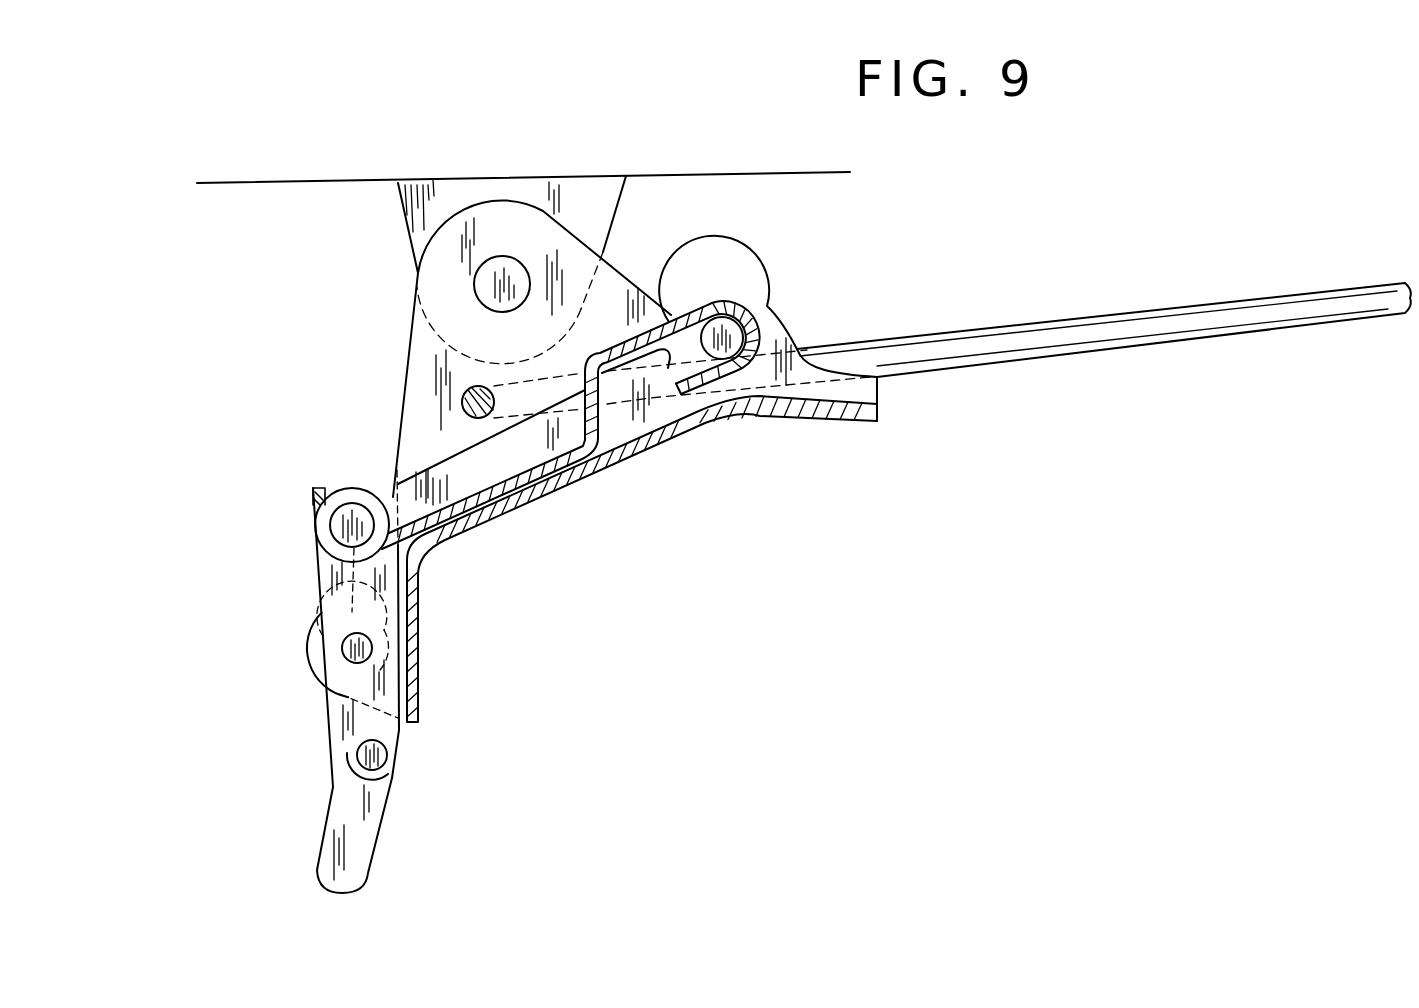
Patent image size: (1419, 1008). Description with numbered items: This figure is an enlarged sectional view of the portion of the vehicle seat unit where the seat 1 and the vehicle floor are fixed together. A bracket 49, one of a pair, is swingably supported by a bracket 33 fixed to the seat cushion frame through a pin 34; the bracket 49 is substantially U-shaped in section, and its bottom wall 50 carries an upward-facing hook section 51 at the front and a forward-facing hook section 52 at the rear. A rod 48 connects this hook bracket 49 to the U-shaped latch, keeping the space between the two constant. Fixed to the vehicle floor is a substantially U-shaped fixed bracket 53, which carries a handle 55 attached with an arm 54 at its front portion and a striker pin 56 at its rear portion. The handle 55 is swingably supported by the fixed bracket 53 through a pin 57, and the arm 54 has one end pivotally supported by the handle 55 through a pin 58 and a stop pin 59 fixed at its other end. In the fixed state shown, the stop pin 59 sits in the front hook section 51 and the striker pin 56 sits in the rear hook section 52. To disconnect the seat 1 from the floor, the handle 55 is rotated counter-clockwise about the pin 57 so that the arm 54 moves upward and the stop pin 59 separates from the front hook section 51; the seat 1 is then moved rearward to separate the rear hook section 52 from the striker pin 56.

The seat 1 is at (272, 183).
The bracket 33 is at (613, 220).
The pin 34 is at (474, 287).
The rod 48 is at (1137, 312).
The bracket 49 is at (406, 371).
The bottom wall 50 is at (622, 335).
The upward-facing hook section 51 is at (313, 495).
The forward-facing hook section 52 is at (748, 314).
The fixed bracket 53 is at (698, 433).
The arm 54 is at (318, 578).
The handle 55 is at (320, 856).
The striker pin 56 is at (728, 346).
The pin 57 is at (372, 650).
The pin 58 is at (372, 758).
The stop pin 59 is at (354, 530).